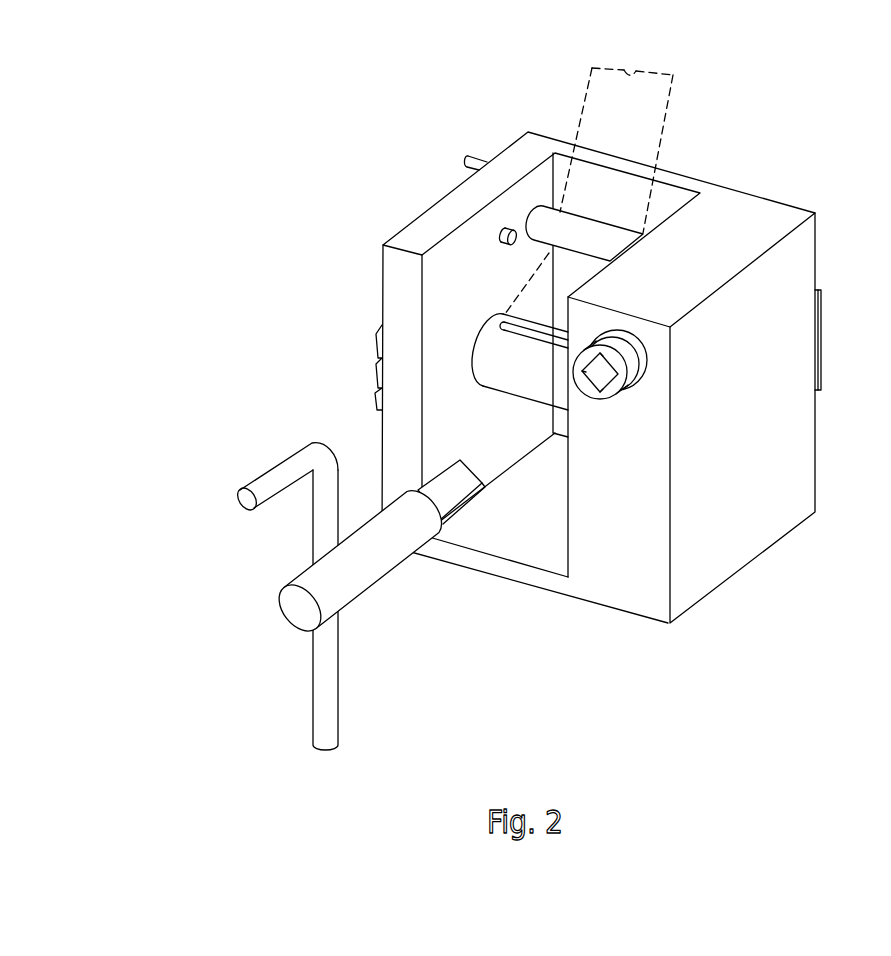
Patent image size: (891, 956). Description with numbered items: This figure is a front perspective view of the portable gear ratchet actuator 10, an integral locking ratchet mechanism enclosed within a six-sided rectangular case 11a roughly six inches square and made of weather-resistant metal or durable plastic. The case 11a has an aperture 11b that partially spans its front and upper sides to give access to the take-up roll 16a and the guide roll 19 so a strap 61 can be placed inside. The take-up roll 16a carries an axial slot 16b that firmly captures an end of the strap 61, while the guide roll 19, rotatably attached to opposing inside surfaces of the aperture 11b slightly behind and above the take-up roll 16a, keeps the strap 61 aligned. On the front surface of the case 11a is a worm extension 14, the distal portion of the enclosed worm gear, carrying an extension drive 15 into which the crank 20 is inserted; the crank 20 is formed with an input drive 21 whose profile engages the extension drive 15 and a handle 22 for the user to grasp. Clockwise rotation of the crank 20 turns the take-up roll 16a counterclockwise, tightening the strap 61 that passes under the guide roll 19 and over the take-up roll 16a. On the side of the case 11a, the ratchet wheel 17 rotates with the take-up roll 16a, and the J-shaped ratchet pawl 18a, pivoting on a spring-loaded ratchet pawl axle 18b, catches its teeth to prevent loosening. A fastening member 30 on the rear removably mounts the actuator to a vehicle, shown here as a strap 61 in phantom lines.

The portable gear ratchet actuator 10 is at (91, 173).
The case 11a is at (742, 480).
The aperture 11b is at (488, 485).
The worm extension 14 is at (647, 380).
The extension drive 15 is at (596, 380).
The take-up roll 16a is at (517, 373).
The axial slot 16b is at (542, 340).
The ratchet wheel 17 is at (378, 355).
The ratchet pawl 18a is at (468, 168).
The ratchet pawl axle 18b is at (500, 228).
The guide roll 19 is at (547, 220).
The crank 20 is at (383, 652).
The input drive 21 is at (438, 490).
The handle 22 is at (267, 485).
The fastening member 30 is at (818, 340).
The strap 61 is at (672, 112).